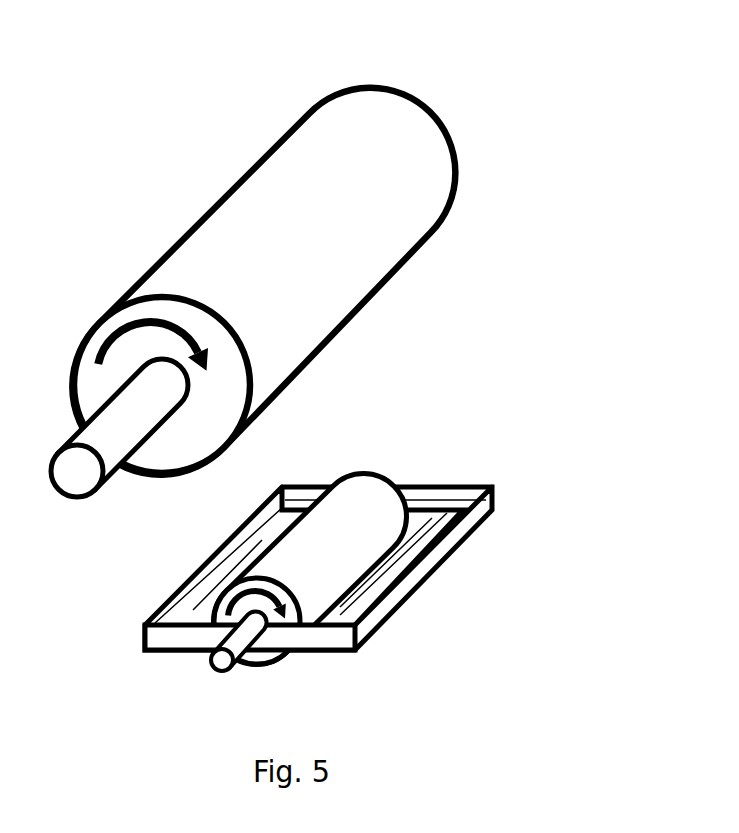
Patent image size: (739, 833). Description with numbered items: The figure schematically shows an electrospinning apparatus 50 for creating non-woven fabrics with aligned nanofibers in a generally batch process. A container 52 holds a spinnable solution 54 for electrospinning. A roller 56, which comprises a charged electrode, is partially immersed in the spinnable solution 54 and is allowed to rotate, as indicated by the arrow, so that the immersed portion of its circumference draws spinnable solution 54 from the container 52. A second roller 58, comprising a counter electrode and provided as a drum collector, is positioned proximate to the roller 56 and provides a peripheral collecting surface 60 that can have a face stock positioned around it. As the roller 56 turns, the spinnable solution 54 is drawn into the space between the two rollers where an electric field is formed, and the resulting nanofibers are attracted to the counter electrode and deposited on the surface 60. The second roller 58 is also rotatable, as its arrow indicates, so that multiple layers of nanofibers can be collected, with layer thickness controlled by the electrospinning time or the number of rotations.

The electrospinning apparatus 50 is at (154, 80).
The container 52 is at (407, 590).
The spinnable solution 54 is at (407, 552).
The roller 56 is at (377, 505).
The second roller 58 is at (430, 180).
The peripheral collecting surface 60 is at (400, 286).